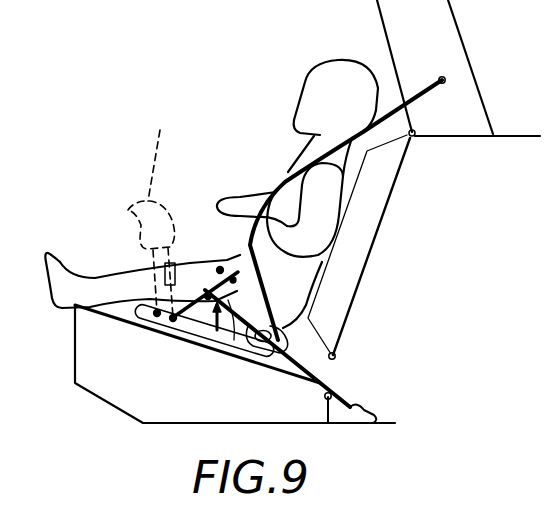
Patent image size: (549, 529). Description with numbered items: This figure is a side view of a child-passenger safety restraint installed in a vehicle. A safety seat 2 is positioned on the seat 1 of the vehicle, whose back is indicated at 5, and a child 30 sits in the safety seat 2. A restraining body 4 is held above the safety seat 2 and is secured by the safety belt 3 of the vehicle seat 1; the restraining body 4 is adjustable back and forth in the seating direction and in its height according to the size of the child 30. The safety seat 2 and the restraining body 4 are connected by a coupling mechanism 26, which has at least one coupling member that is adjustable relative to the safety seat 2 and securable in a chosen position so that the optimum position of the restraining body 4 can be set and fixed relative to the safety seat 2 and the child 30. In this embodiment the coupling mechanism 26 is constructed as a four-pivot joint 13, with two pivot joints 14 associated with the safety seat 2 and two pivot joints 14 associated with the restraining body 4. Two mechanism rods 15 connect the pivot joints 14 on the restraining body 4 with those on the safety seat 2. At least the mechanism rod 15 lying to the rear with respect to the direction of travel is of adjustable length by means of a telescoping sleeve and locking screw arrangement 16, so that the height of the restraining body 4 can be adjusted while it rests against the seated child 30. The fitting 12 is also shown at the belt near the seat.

The seat 1 is at (85, 370).
The safety seat 2 is at (193, 324).
The safety belt 3 is at (393, 105).
The restraining body 4 is at (250, 265).
The back of the vehicle seat 5 is at (367, 236).
The belt anchoring fitting 12 is at (267, 348).
The four-pivot joint 13 is at (192, 265).
The pivot joints 14 is at (220, 268).
The mechanism rods 15 is at (235, 318).
The telescoping sleeve and locking screw arrangement 16 is at (215, 267).
The coupling mechanism 26 is at (219, 322).
The child 30 is at (300, 274).